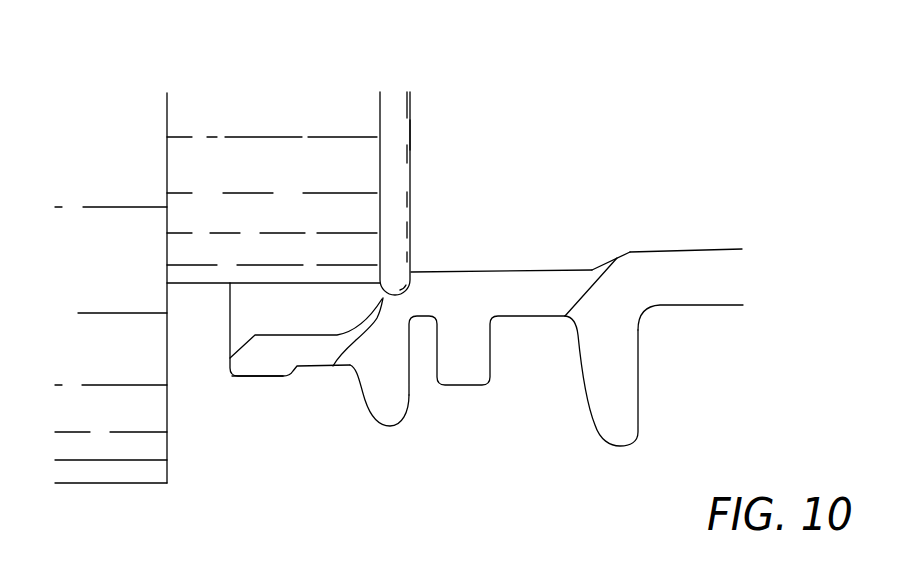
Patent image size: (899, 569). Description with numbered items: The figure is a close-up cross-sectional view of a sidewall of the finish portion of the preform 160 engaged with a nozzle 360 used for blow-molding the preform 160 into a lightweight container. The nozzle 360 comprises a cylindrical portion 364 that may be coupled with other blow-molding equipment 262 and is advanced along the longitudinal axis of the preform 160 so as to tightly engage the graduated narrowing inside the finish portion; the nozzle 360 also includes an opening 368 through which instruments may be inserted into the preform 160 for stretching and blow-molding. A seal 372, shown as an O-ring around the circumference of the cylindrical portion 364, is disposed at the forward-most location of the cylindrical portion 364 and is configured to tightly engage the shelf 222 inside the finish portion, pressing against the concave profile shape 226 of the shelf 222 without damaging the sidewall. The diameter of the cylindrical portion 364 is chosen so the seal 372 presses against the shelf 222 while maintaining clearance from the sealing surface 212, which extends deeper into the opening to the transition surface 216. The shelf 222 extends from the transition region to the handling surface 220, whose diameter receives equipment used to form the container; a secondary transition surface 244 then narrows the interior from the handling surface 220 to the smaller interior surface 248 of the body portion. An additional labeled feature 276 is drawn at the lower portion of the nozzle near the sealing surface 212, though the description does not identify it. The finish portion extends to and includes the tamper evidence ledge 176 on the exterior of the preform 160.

The nozzle 360 is at (214, 84).
The cylindrical portion 364 is at (298, 181).
The seal 372 is at (396, 108).
The shelf 222 is at (411, 136).
The opening 368 is at (420, 171).
The handling surface 220 is at (538, 254).
The secondary transition surface 244 is at (613, 262).
The interior surface 248 is at (718, 227).
The sealing surface 212 is at (308, 322).
The lower flange 276 is at (263, 358).
The transition surface 216 is at (333, 366).
The concave profile shape 226 is at (408, 296).
The tamper evidence ledge 176 is at (620, 447).
The preform 160 is at (693, 307).
The blow-molding equipment 262 is at (108, 483).